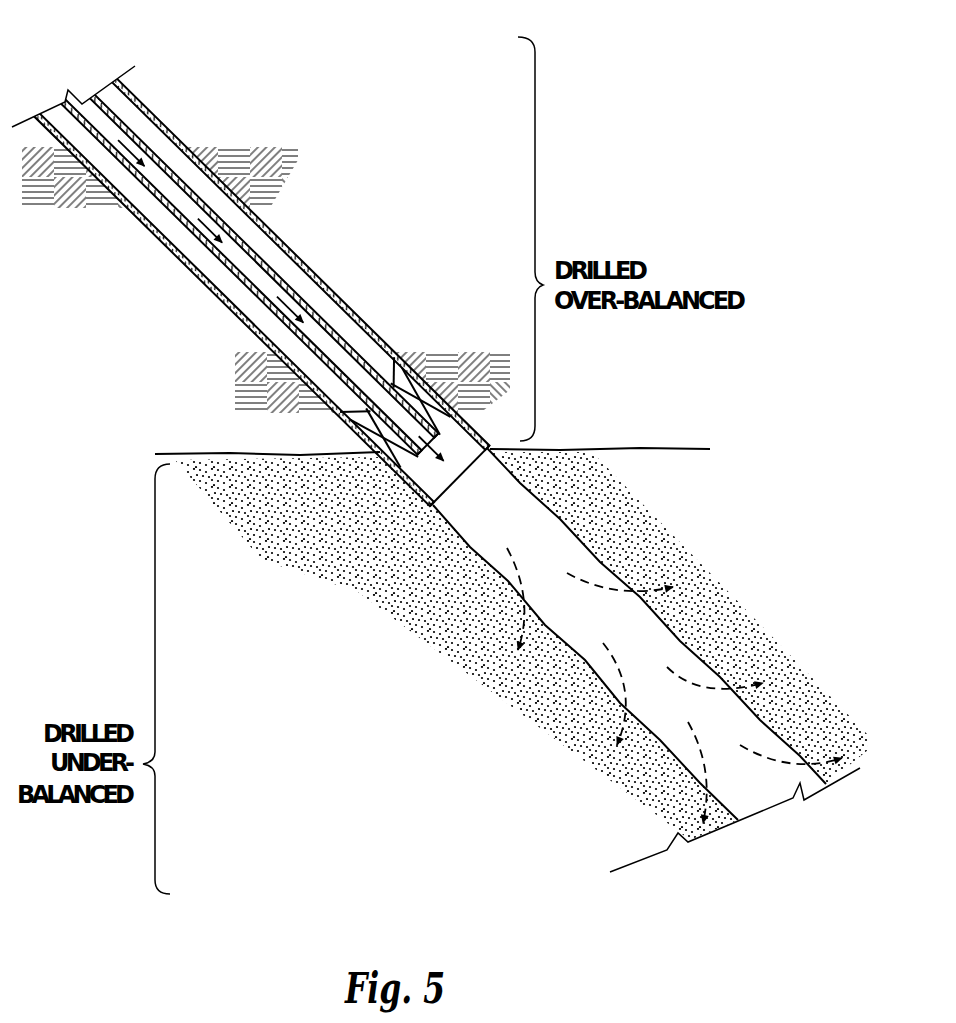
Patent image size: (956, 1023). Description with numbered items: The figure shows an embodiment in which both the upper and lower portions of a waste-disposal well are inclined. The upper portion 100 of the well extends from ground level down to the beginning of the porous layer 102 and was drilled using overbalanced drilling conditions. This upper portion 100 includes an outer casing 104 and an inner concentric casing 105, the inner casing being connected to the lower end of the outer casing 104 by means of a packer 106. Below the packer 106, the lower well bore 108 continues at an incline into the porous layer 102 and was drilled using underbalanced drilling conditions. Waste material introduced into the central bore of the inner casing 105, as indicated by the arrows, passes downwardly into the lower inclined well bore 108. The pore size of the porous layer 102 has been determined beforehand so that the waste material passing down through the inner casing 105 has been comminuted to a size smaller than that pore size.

The upper portion of the well 100 is at (320, 280).
The porous layer 102 is at (659, 483).
The outer casing 104 is at (172, 253).
The inner concentric casing 105 is at (126, 128).
The packer 106 is at (399, 388).
The lower well bore 108 is at (581, 618).